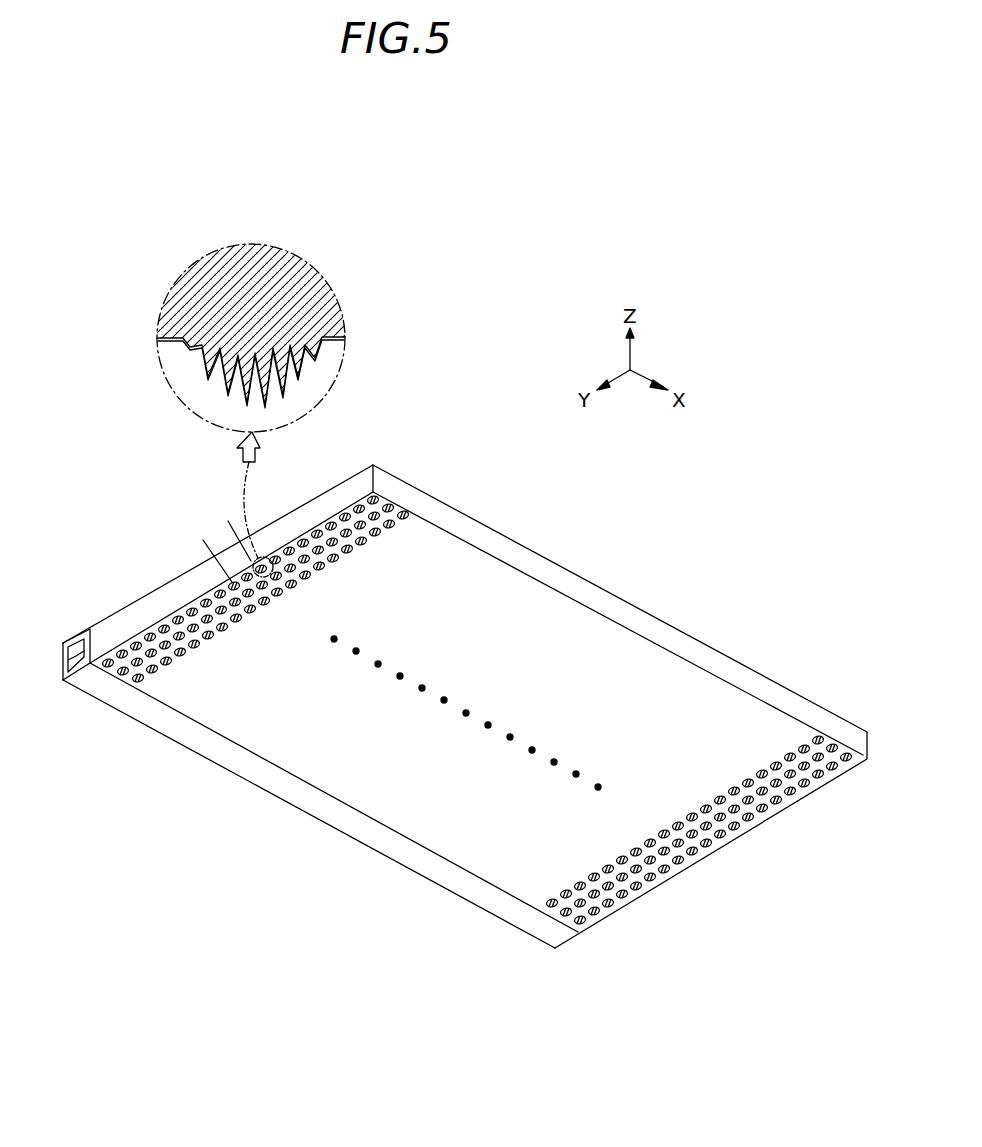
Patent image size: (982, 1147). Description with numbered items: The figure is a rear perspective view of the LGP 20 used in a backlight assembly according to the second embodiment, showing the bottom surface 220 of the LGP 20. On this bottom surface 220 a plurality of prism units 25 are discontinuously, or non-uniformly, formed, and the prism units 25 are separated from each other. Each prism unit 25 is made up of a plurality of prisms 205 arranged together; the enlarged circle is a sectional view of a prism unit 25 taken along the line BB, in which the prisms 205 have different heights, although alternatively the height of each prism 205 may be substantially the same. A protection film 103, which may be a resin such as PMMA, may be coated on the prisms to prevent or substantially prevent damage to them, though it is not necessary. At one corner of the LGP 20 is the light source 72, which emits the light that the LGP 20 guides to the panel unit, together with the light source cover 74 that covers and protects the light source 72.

The light guide plate (LGP) 20 is at (765, 819).
The bottom surface 220 is at (447, 813).
The prism unit 25 is at (233, 586).
The light source 72 is at (78, 652).
The light source cover 74 is at (89, 695).
The protection film 103 is at (207, 366).
The prism 205 is at (211, 373).